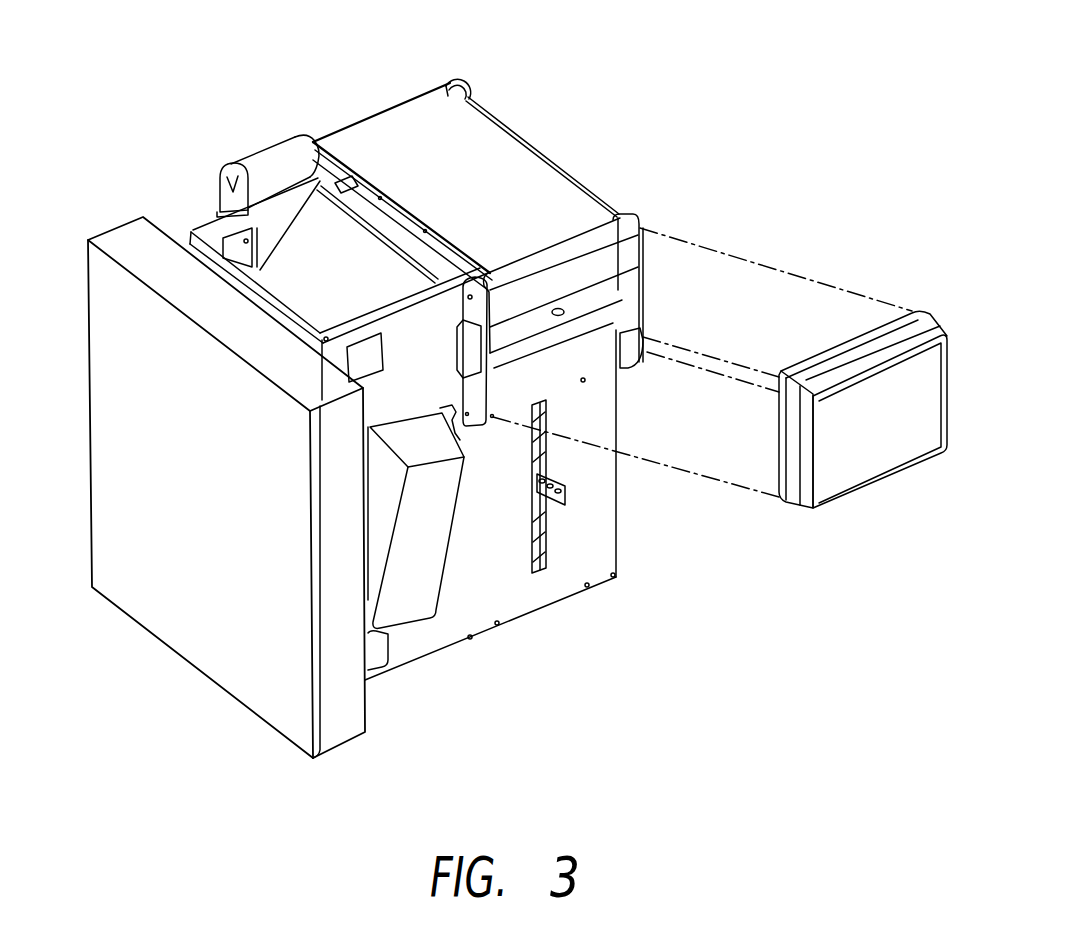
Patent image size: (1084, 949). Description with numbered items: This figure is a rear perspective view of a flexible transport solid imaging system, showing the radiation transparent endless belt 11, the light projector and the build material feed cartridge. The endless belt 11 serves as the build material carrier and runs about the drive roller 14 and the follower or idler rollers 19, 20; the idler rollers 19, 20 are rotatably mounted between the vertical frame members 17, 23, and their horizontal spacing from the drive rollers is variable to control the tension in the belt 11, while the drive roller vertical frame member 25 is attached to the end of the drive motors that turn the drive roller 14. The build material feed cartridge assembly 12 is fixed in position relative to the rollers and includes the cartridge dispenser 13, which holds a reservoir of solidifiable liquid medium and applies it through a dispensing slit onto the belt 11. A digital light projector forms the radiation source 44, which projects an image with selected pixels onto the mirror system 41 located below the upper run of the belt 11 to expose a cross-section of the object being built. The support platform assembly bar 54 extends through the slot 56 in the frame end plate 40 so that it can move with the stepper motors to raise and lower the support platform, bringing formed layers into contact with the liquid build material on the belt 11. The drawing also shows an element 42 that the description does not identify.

The endless belt 11 is at (462, 166).
The build material feed cartridge assembly 12 is at (887, 497).
The cartridge dispenser 13 is at (645, 292).
The drive roller 14 is at (448, 80).
The vertical frame member 17 is at (641, 258).
The idler roller 19 is at (618, 217).
The idler roller 20 is at (628, 358).
The vertical frame member 23 is at (460, 302).
The drive roller vertical frame member 25 is at (221, 194).
The frame end plate 40 is at (508, 566).
The mirror system 41 is at (348, 270).
The front panel 42 is at (240, 707).
The radiation source 44 is at (423, 613).
The support platform assembly bar 54 is at (570, 494).
The slot 56 is at (540, 556).